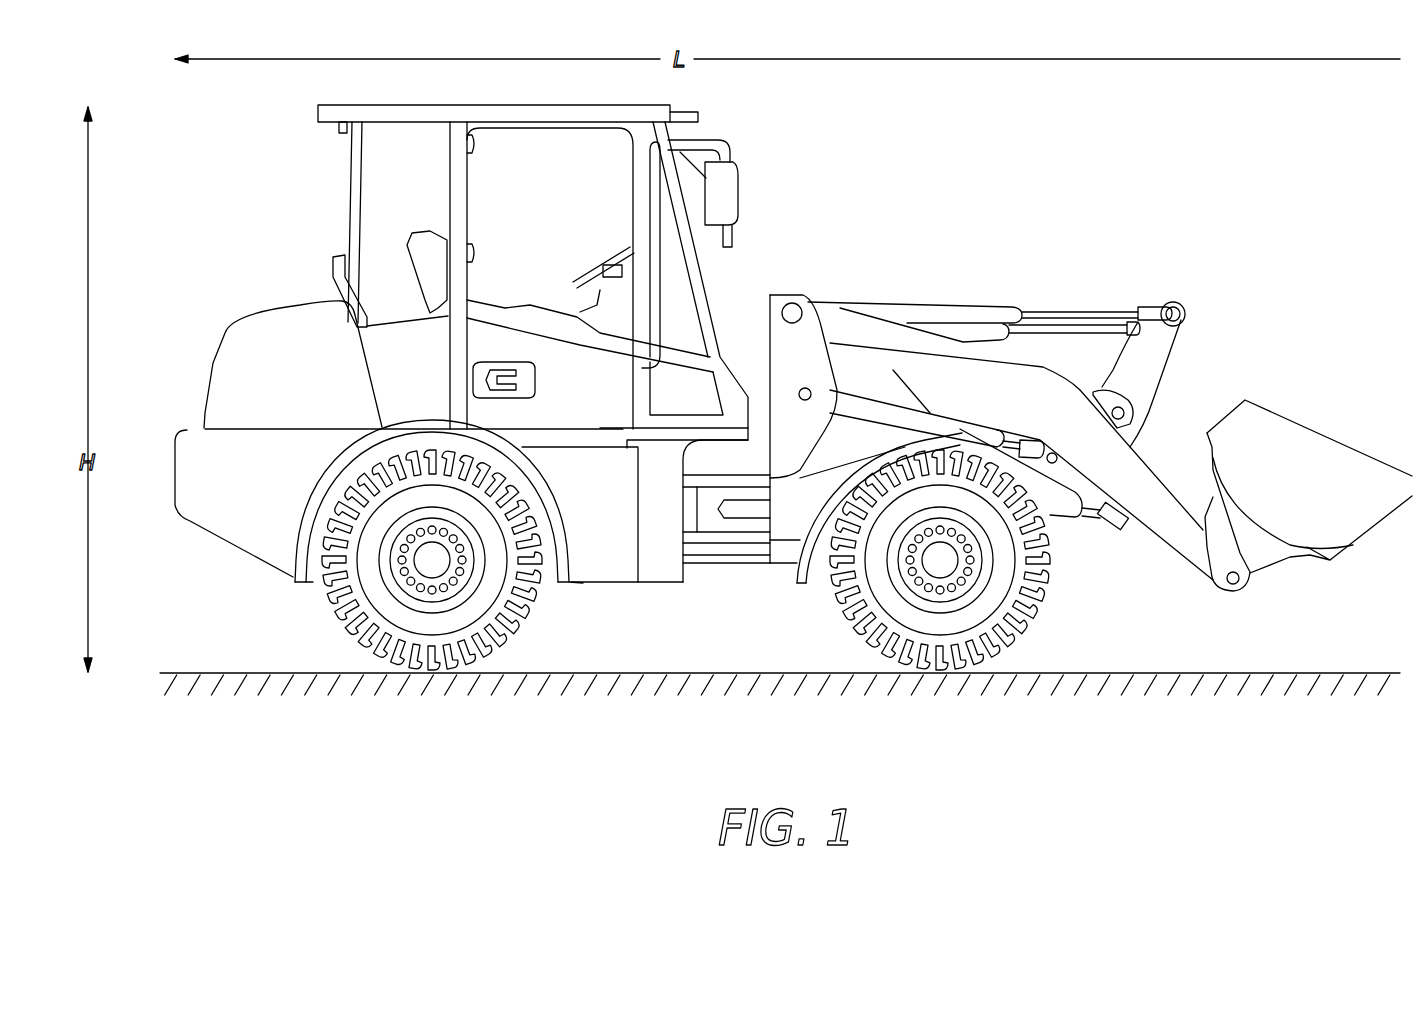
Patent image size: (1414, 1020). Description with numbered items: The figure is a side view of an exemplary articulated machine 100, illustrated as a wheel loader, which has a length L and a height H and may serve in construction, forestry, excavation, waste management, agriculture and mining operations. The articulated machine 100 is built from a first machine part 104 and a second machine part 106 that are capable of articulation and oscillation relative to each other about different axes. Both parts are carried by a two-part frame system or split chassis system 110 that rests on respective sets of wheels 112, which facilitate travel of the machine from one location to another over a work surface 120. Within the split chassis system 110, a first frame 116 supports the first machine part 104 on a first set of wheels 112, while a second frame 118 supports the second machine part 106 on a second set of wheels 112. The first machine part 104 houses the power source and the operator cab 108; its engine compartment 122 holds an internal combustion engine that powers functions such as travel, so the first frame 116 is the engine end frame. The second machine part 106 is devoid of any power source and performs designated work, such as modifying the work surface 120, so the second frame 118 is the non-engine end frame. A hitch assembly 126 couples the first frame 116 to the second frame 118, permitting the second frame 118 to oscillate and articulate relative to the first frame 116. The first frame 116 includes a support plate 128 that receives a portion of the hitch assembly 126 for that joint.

The articulated machine 100 is at (1215, 148).
The first machine part 104 is at (180, 349).
The second machine part 106 is at (941, 286).
The operator cab 108 is at (350, 145).
The split chassis system 110 is at (603, 597).
The wheels 112 is at (325, 608).
The first frame 116 is at (668, 590).
The second frame 118 is at (777, 570).
The work surface 120 is at (1300, 670).
The engine compartment 122 is at (205, 405).
The hitch assembly 126 is at (740, 582).
The support plate 128 is at (687, 573).